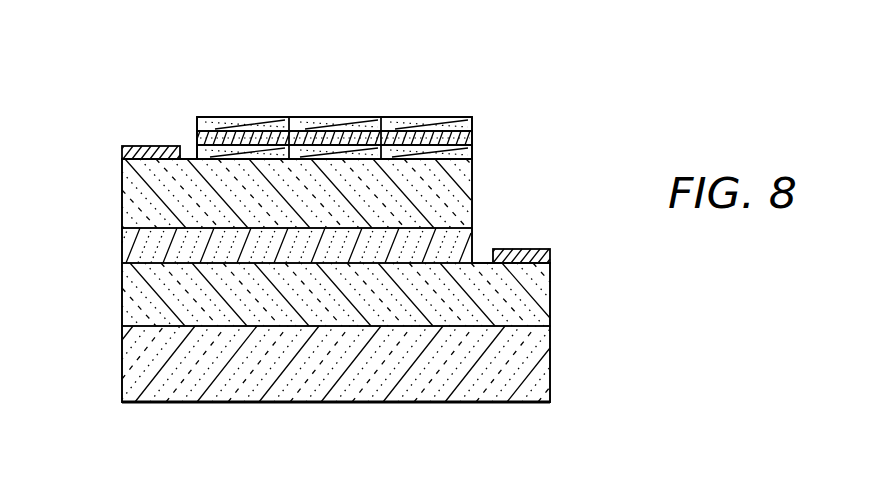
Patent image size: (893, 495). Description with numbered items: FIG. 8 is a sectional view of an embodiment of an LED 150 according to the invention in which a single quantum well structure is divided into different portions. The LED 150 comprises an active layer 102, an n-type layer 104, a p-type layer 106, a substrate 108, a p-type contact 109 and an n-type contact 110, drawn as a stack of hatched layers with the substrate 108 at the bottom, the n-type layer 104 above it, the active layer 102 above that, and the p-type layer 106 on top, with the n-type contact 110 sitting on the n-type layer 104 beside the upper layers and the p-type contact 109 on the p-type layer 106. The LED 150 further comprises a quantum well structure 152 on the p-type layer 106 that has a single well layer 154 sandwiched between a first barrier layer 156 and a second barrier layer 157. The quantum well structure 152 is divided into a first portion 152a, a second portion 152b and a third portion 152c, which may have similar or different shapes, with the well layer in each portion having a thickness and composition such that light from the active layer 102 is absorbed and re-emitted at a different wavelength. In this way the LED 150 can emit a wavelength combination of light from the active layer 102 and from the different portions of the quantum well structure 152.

The LED 150 is at (602, 142).
The quantum well structure 152 is at (335, 117).
The first portion 152a is at (252, 117).
The second portion 152b is at (340, 117).
The third portion 152c is at (424, 117).
The well layer 154 is at (473, 138).
The first barrier layer 156 is at (473, 150).
The second barrier layer 157 is at (197, 124).
The p-type contact 109 is at (122, 151).
The n-type contact 110 is at (533, 249).
The p-type layer 106 is at (122, 195).
The active layer 102 is at (122, 247).
The n-type layer 104 is at (122, 295).
The substrate 108 is at (122, 365).